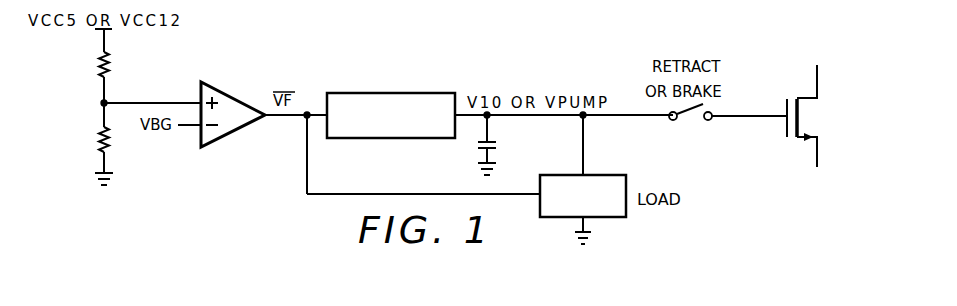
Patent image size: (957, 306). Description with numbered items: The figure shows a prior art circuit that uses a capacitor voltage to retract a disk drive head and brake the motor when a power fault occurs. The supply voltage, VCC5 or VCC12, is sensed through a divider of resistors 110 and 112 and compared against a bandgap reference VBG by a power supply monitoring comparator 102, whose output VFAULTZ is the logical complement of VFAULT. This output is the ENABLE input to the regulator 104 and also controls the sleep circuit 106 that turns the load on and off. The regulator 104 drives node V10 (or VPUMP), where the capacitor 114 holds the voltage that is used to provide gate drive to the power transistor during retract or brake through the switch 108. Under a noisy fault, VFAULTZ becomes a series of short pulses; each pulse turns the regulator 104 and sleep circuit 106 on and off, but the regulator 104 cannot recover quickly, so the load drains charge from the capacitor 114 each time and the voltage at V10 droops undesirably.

The power supply monitoring comparator 102 is at (235, 132).
The regulator 104 is at (392, 93).
The sleep circuit 106 is at (609, 218).
The retract or brake switch 108 is at (690, 120).
The upper voltage divider resistor 110 is at (99, 60).
The lower voltage divider resistor 112 is at (99, 142).
The capacitor 114 is at (497, 145).